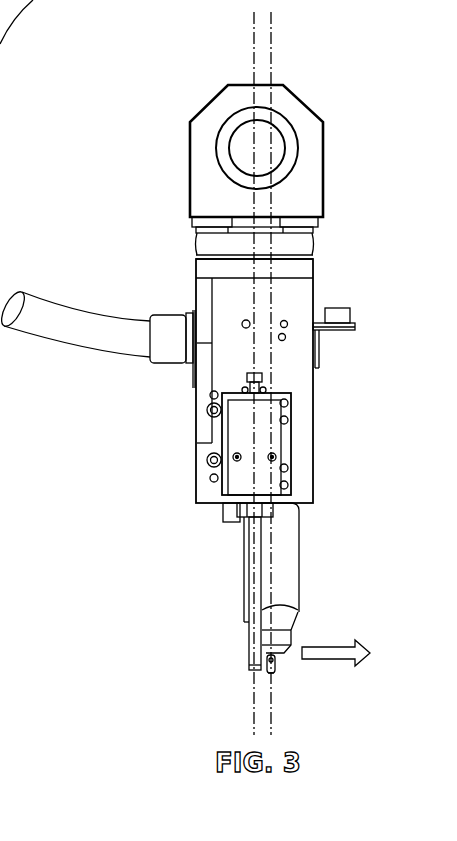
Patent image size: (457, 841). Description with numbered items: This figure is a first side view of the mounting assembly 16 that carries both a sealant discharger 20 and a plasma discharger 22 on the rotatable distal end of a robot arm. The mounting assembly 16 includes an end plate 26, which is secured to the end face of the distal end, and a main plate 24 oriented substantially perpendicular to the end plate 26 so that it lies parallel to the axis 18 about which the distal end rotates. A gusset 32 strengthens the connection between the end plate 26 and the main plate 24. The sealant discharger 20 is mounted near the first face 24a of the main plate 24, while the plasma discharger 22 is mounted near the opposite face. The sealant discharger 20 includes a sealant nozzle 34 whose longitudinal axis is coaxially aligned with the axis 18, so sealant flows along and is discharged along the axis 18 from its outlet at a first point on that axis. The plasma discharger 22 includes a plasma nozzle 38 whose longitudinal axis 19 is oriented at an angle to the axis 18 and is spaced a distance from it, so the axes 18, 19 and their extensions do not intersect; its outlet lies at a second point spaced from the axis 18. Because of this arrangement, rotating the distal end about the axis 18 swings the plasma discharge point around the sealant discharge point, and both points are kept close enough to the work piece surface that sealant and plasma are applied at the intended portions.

The mounting assembly 16 is at (118, 131).
The axis 18 is at (254, 42).
The longitudinal axis of the plasma nozzle 19 is at (271, 47).
The sealant discharger 20 is at (255, 437).
The plasma discharger 22 is at (283, 562).
The main plate 24 is at (289, 390).
The first face 24a is at (288, 295).
The end plate 26 is at (298, 268).
The gusset 32 is at (203, 296).
The sealant nozzle 34 is at (255, 583).
The plasma nozzle 38 is at (278, 668).